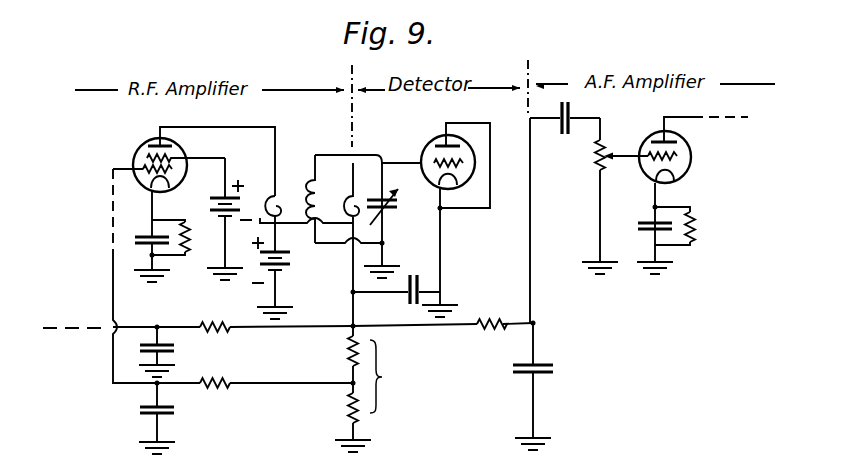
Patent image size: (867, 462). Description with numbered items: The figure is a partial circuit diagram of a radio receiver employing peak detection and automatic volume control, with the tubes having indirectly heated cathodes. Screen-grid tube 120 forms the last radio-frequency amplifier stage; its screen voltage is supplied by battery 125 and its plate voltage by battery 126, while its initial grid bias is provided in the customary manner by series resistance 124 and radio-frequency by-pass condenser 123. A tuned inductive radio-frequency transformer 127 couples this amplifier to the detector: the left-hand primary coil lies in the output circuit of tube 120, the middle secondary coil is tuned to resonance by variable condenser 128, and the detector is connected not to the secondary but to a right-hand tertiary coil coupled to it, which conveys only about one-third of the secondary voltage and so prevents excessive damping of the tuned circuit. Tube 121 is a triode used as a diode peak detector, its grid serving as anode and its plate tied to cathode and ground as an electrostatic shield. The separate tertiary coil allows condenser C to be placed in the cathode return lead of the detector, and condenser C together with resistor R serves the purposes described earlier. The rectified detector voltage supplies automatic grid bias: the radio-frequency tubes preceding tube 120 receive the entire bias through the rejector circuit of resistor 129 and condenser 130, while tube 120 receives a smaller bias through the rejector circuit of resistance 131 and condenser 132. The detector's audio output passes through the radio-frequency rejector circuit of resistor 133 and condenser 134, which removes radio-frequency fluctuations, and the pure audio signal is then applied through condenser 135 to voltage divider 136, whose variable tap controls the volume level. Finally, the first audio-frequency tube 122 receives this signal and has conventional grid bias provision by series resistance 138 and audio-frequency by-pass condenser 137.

The screen-grid tube 120 is at (134, 150).
The triode detector tube 121 is at (431, 148).
The first audio-frequency tube 122 is at (656, 134).
The radio-frequency by-pass condenser 123 is at (142, 243).
The series resistance 124 is at (188, 241).
The screen voltage battery 125 is at (220, 196).
The plate voltage battery 126 is at (294, 263).
The tuned inductive radio-frequency transformer 127 is at (313, 226).
The variable condenser 128 is at (386, 217).
The resistor 129 is at (220, 332).
The condenser 130 is at (177, 349).
The resistance 131 is at (218, 387).
The condenser 132 is at (178, 407).
The resistor 133 is at (496, 331).
The condenser 134 is at (556, 366).
The condenser 135 is at (563, 137).
The voltage divider 136 is at (593, 176).
The audio-frequency by-pass condenser 137 is at (637, 228).
The series resistance 138 is at (700, 218).
The condenser C is at (408, 298).
The resistor R is at (367, 394).